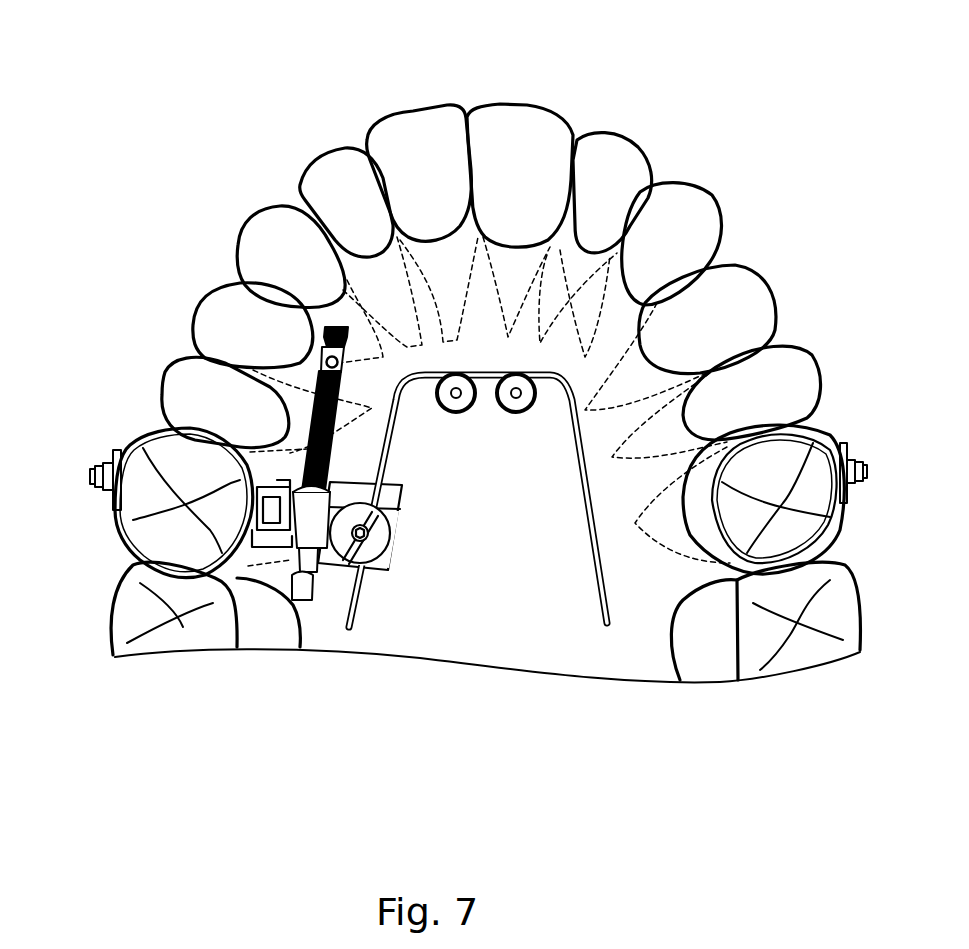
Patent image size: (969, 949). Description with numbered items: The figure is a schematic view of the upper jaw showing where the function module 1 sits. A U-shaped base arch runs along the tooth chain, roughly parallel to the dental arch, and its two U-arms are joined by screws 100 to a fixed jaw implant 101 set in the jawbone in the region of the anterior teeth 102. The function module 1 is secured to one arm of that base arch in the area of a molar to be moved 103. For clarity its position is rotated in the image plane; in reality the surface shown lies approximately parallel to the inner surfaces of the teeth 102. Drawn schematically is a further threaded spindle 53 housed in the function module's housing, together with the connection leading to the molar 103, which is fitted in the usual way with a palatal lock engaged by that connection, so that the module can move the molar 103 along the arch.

The function module 1 is at (387, 590).
The threaded spindle 53 is at (312, 437).
The screws 100 is at (458, 385).
The jaw implant 101 is at (484, 428).
The teeth 102 is at (728, 195).
The molar to be moved 103 is at (180, 537).